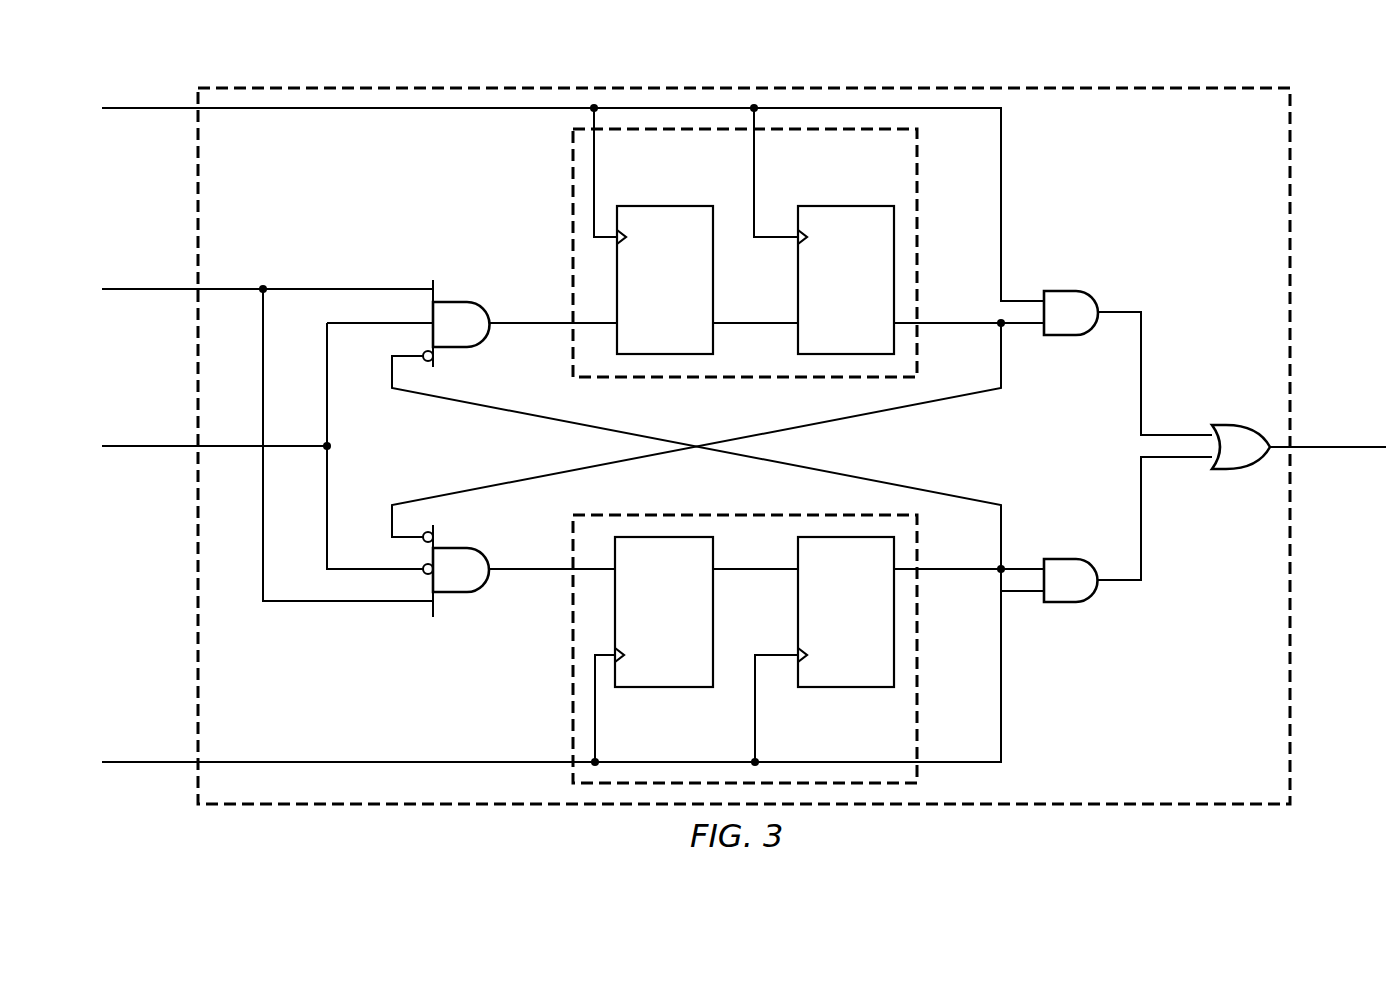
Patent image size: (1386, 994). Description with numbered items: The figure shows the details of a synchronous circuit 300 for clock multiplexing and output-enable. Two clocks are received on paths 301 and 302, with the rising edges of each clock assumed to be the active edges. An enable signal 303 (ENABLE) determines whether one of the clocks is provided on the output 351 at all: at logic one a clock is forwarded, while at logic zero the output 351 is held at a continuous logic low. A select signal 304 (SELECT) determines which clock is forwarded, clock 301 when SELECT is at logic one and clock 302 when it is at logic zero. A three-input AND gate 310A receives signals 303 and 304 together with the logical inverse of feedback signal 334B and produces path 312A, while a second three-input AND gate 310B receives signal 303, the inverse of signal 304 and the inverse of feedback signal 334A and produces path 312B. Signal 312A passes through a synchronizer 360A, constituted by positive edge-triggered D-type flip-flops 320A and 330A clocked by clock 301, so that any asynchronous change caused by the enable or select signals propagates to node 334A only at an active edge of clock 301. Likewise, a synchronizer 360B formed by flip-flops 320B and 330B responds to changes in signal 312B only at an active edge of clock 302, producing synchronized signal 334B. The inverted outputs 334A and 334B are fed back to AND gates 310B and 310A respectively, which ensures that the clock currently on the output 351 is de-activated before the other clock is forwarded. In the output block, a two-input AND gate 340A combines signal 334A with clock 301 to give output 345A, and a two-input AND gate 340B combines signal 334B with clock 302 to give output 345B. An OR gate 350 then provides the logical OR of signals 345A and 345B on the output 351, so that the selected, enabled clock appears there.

The synchronous circuit 300 is at (925, 84).
The clock path 301 is at (152, 108).
The clock path 302 is at (143, 766).
The enable signal 303 is at (152, 289).
The select signal 304 is at (152, 446).
The three-input AND gate 310A is at (464, 298).
The three-input AND gate 310B is at (462, 596).
The second logic output 312A is at (539, 320).
The first logic output 312B is at (537, 574).
The flip-flop 320A is at (663, 206).
The flip-flop 320B is at (662, 690).
The flip-flop 330A is at (863, 206).
The flip-flop 330B is at (848, 690).
The second synchronized signal 334A is at (966, 321).
The first synchronized signal 334B is at (953, 573).
The two-input AND gate 340A is at (1069, 289).
The two-input AND gate 340B is at (1068, 606).
The output of AND gate 340A 345A is at (1179, 433).
The output of AND gate 340B 345B is at (1183, 462).
The OR gate 350 is at (1241, 424).
The output 351 is at (1344, 446).
The second synchronizer 360A is at (572, 212).
The first synchronizer 360B is at (572, 680).